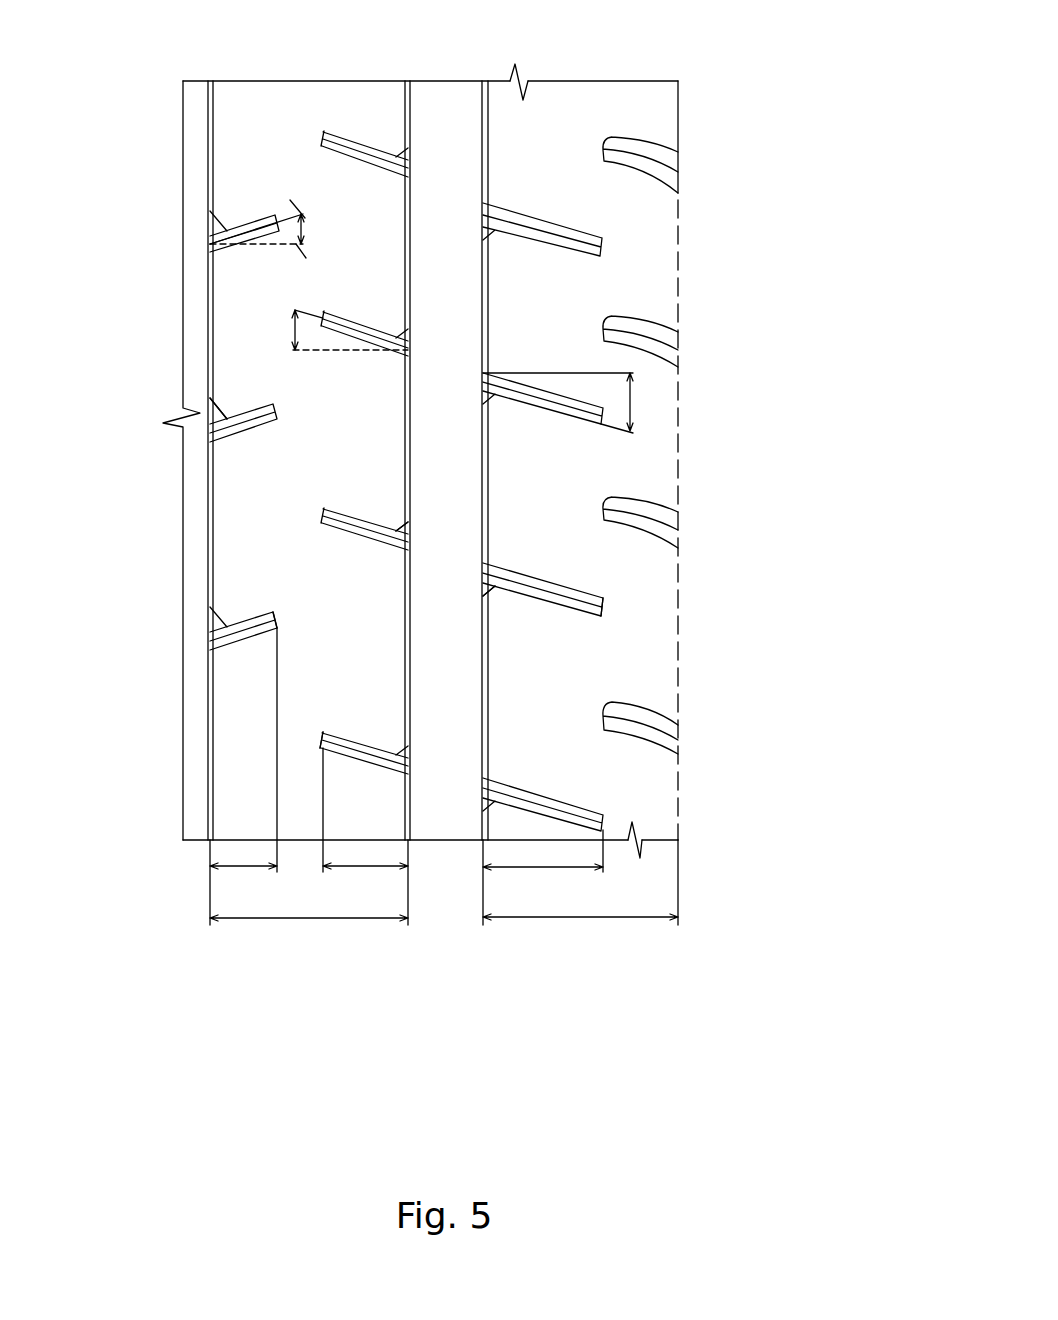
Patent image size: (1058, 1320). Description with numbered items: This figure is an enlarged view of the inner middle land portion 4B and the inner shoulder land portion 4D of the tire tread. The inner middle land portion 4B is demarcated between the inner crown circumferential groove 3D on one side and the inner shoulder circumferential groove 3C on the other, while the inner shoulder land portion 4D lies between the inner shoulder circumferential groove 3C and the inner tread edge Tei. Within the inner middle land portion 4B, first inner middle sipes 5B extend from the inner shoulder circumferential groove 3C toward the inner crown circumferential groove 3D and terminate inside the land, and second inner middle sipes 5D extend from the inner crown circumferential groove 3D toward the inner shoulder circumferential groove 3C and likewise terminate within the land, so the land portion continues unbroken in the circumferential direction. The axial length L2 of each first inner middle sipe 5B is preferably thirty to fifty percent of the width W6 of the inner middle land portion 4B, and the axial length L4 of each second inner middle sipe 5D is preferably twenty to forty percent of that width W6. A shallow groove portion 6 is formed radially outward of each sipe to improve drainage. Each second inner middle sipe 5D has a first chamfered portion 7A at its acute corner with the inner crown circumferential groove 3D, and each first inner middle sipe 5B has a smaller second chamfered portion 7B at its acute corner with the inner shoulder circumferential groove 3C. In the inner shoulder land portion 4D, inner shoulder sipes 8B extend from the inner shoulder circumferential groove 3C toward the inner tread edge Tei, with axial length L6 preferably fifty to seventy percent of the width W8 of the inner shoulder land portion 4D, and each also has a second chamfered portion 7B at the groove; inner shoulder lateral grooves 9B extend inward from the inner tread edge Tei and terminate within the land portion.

The inner crown circumferential groove 3D is at (196, 110).
The inner shoulder circumferential groove 3C is at (445, 118).
The inner middle land portion 4B is at (285, 125).
The inner shoulder land portion 4D is at (565, 110).
The first inner middle sipe 5B is at (342, 316).
The second inner middle sipe 5D is at (228, 230).
The shallow groove portion 6 is at (245, 639).
The first chamfered portion 7A is at (210, 423).
The second chamfered portion 7B is at (408, 533).
The inner shoulder sipe 8B is at (533, 402).
The inner shoulder lateral groove 9B is at (633, 725).
The inner tread edge Tei is at (680, 118).
The length of second inner middle sipe L4 is at (243, 776).
The length of first inner middle sipe L2 is at (365, 836).
The length of inner shoulder sipe L6 is at (543, 877).
The width of inner middle land portion W6 is at (309, 932).
The width of inner shoulder land portion W8 is at (580, 894).